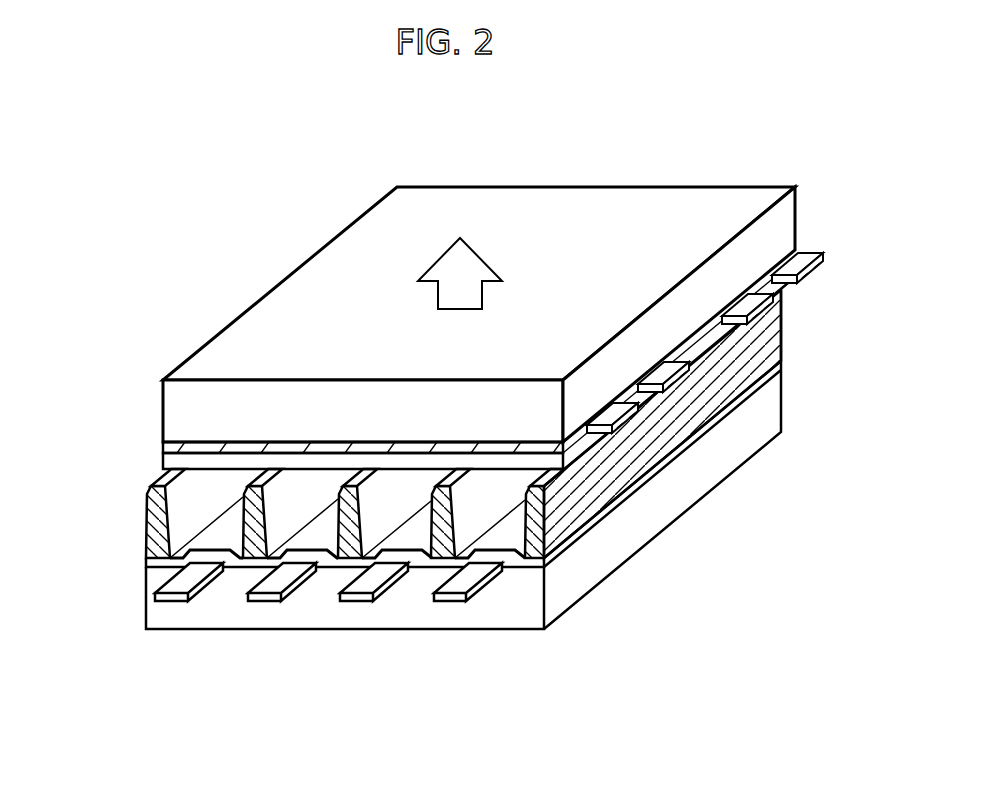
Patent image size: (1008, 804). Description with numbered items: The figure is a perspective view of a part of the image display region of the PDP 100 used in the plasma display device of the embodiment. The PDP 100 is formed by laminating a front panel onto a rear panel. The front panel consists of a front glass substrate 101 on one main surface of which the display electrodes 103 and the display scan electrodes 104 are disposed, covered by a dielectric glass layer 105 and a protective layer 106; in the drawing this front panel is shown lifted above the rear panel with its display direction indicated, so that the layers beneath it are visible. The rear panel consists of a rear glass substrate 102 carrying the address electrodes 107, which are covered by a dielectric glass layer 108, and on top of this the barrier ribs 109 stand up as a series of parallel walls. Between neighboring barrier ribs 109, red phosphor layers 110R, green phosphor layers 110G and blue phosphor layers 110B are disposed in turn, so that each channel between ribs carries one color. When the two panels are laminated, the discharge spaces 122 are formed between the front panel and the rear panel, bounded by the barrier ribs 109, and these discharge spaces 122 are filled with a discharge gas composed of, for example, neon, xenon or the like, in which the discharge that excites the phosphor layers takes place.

The PDP 100 is at (792, 407).
The front glass substrate 101 is at (178, 402).
The rear glass substrate 102 is at (587, 573).
The display electrodes 103 is at (744, 297).
The display scan electrodes 104 is at (770, 317).
The dielectric glass layer 105 is at (168, 446).
The protective layer 106 is at (170, 463).
The address electrodes 107 is at (167, 602).
The dielectric glass layer 108 is at (158, 565).
The barrier ribs 109 is at (243, 498).
The red phosphor layers 110R is at (213, 551).
The green phosphor layers 110G is at (310, 552).
The blue phosphor layers 110B is at (400, 552).
The discharge spaces 122 is at (489, 493).